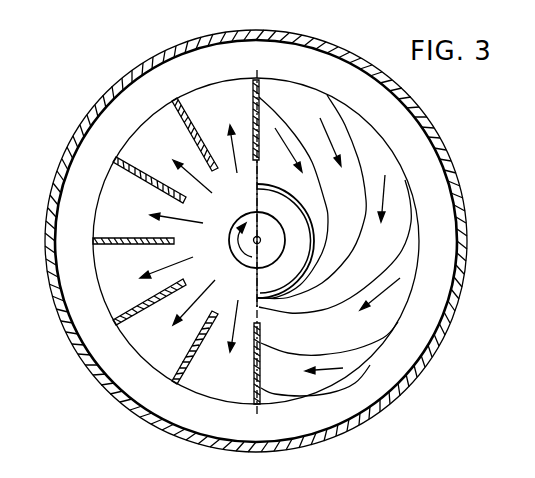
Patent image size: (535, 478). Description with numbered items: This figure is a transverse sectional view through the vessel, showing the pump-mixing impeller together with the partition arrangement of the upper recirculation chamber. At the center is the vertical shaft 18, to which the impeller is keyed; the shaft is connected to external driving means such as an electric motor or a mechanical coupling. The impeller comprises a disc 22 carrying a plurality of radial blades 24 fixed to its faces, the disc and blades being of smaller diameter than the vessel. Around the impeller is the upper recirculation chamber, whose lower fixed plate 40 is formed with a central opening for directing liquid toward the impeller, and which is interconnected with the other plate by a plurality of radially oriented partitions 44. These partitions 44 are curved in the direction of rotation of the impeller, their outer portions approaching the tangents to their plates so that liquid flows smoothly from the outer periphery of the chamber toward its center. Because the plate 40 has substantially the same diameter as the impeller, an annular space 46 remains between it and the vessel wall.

The vertical shaft 18 is at (250, 230).
The disc 22 is at (217, 85).
The radial blades 24 is at (192, 133).
The fixed plate 40 is at (388, 167).
The radially oriented partitions 44 is at (322, 311).
The annular space 46 is at (447, 271).